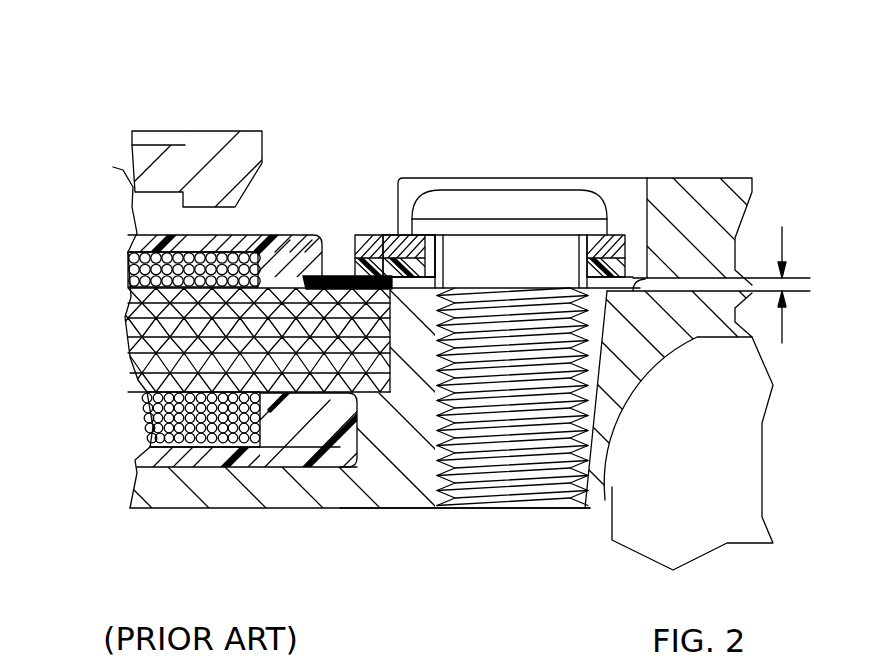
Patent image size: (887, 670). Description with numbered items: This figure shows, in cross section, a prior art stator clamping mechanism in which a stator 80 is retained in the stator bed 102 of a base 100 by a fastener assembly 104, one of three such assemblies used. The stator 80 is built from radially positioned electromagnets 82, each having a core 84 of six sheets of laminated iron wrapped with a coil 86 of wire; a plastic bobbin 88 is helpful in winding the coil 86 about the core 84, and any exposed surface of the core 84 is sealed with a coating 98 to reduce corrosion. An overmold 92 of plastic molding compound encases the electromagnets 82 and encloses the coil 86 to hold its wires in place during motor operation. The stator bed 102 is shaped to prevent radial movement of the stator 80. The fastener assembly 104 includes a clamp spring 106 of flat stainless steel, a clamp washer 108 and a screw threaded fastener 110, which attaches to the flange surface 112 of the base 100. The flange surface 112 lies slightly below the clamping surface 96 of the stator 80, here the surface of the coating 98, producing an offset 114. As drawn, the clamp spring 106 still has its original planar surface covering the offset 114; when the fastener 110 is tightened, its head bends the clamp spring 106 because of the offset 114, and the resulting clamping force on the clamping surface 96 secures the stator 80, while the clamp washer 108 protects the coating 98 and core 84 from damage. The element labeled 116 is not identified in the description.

The stator assembly 80 is at (112, 296).
The electromagnets 82 is at (112, 325).
The core 84 is at (143, 348).
The coil 86 is at (128, 270).
The plastic bobbin 88 is at (277, 417).
The overmold 92 is at (232, 243).
The clamping surface 96 is at (358, 233).
The coating 98 is at (335, 276).
The base 100 is at (378, 478).
The stator bed 102 is at (360, 478).
The fastener assembly 104 is at (490, 140).
The clamp spring 106 is at (383, 235).
The clamp washer 108 is at (432, 238).
The fastener 110 is at (500, 510).
The flange surface 112 is at (596, 508).
The offset 114 is at (773, 320).
The fastener head cap 116 is at (512, 205).